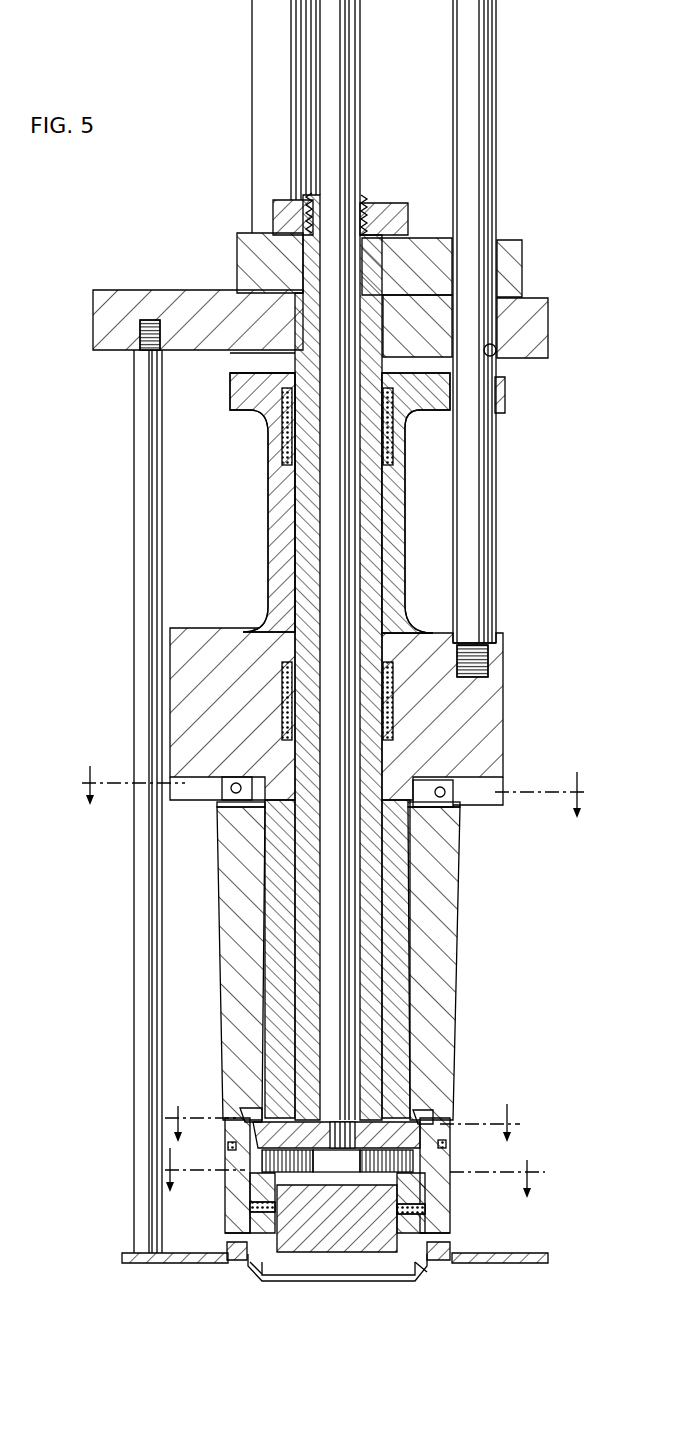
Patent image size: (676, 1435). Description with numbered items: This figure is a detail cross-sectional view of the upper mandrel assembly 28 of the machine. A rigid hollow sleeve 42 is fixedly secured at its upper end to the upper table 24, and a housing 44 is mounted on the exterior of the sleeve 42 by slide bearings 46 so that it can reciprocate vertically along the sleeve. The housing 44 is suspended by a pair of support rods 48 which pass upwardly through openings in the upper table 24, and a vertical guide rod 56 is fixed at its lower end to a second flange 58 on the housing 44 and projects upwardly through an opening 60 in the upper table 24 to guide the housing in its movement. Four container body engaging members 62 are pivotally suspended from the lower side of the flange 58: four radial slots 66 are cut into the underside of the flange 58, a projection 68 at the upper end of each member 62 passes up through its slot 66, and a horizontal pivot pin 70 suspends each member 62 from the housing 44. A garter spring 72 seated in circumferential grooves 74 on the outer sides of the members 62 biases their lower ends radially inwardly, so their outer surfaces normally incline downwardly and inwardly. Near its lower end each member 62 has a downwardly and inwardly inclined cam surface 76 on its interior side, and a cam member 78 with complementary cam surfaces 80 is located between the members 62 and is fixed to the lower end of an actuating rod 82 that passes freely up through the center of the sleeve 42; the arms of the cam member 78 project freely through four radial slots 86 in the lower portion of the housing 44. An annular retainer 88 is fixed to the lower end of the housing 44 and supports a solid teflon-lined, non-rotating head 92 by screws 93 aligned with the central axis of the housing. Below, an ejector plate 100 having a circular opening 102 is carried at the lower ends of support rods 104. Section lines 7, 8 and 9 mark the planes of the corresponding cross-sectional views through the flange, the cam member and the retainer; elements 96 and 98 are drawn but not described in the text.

The upper table 24 is at (540, 328).
The upper mandrel assembly 28 is at (381, 691).
The rigid hollow sleeve 42 is at (373, 488).
The housing 44 is at (252, 612).
The slide bearings 46 is at (282, 425).
The support rods 48 is at (252, 165).
The vertical guide rod 56 is at (480, 478).
The second flange 58 is at (495, 715).
The opening 60 is at (492, 357).
The container body engaging members 62 is at (228, 925).
The radial slots 66 is at (185, 795).
The projection 68 is at (240, 808).
The pivot pin 70 is at (232, 790).
The garter spring 72 is at (455, 1155).
The circumferential grooves 74 is at (226, 1152).
The cam surface 76 is at (265, 1158).
The cam member 78 is at (336, 1162).
The cam surfaces 80 is at (245, 1118).
The actuating rod 82 is at (343, 985).
The radial slots 86 is at (277, 1163).
The annular retainer 88 is at (260, 1207).
The teflon-lined head 92 is at (262, 1272).
The screws 93 is at (415, 1210).
The piston 96 is at (303, 1262).
The cup 98 is at (345, 1282).
The ejector plate 100 is at (160, 1265).
The circular opening 102 is at (455, 1268).
The support rods 104 is at (140, 530).
The section line 7- 7 is at (333, 778).
The section line 8- 8 is at (342, 1110).
The section line 9- 9 is at (355, 1186).